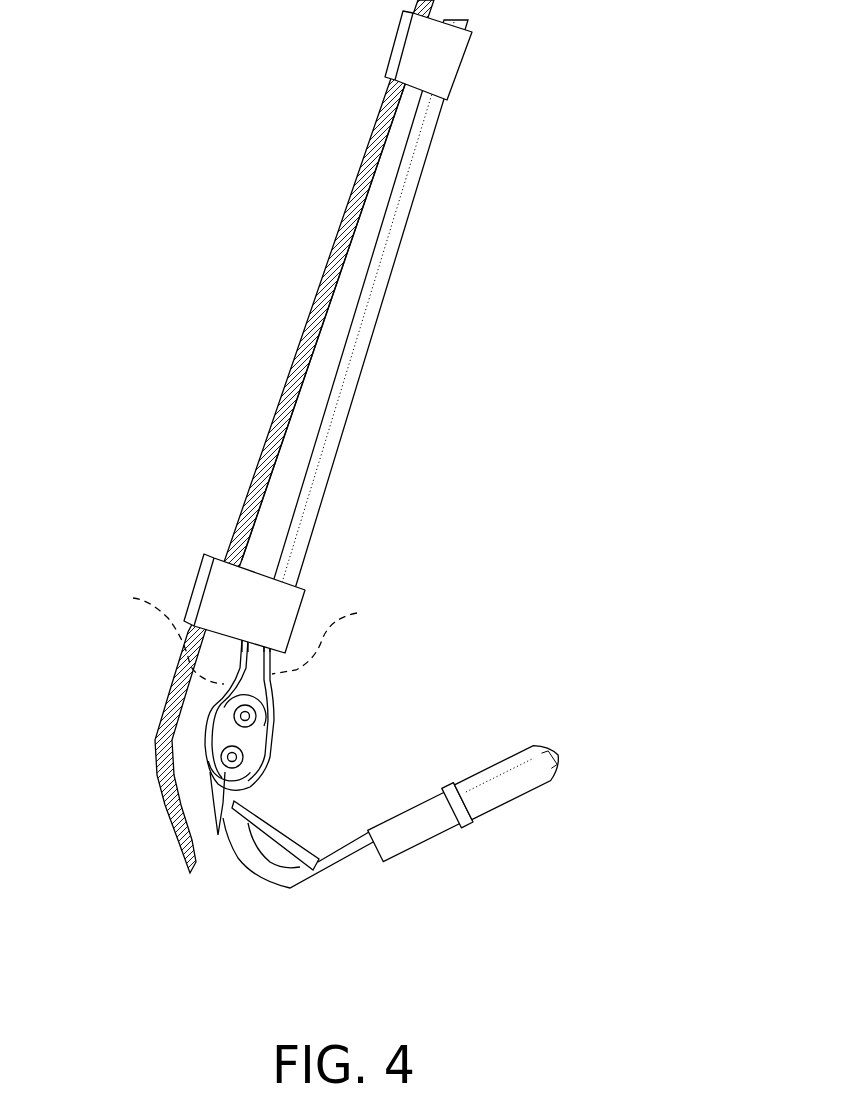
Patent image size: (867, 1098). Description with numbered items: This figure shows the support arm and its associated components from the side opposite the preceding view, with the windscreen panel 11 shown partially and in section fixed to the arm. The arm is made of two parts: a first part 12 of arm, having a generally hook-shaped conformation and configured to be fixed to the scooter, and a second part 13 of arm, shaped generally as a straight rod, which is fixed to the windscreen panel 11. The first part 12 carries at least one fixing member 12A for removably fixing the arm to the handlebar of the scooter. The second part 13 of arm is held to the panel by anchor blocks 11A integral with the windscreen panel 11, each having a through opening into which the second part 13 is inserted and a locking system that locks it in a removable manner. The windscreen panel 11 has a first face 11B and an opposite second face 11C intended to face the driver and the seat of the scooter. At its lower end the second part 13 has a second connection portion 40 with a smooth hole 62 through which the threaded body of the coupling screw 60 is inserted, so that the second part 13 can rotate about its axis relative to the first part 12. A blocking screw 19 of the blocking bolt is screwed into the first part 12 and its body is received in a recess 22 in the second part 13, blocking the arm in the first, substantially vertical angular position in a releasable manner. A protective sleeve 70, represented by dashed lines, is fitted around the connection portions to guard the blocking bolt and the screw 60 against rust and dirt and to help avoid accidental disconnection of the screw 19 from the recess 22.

The windscreen panel 11 is at (352, 436).
The anchor block 11A is at (448, 52).
The first face of the windscreen panel 11B is at (312, 310).
The second face of the windscreen panel 11C is at (331, 290).
The second part of arm 13 is at (414, 202).
The blocking screw 19 is at (277, 712).
The second connection portion 40 is at (230, 729).
The recess 22 is at (258, 728).
The coupling screw 60 is at (246, 762).
The protective sleeve 70 is at (245, 632).
The first part of arm 12 is at (303, 866).
The smooth hole 62 is at (218, 836).
The fixing member 12A is at (511, 828).